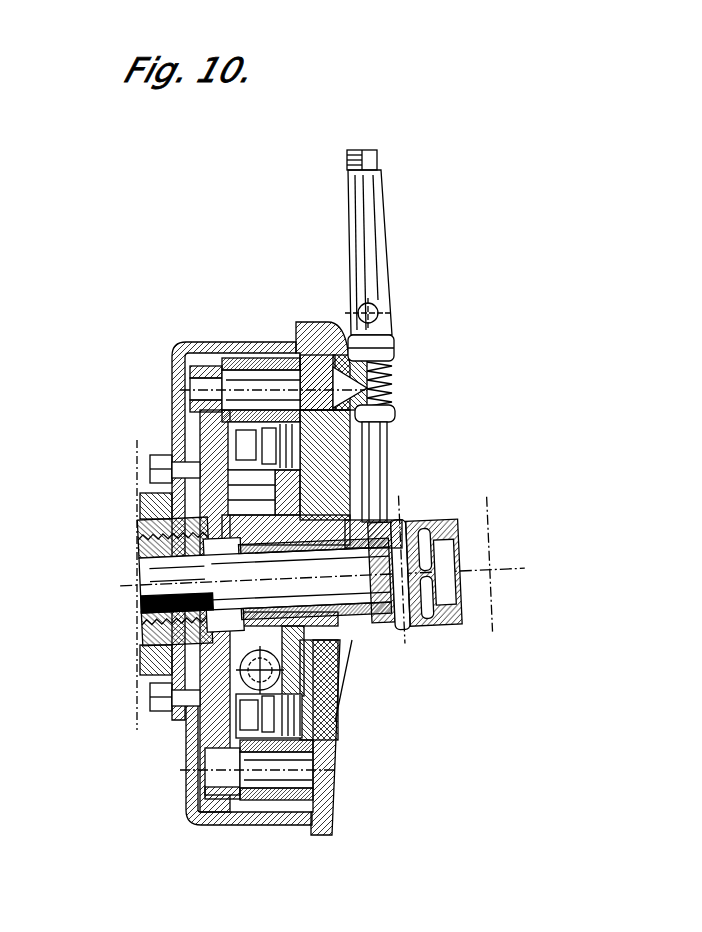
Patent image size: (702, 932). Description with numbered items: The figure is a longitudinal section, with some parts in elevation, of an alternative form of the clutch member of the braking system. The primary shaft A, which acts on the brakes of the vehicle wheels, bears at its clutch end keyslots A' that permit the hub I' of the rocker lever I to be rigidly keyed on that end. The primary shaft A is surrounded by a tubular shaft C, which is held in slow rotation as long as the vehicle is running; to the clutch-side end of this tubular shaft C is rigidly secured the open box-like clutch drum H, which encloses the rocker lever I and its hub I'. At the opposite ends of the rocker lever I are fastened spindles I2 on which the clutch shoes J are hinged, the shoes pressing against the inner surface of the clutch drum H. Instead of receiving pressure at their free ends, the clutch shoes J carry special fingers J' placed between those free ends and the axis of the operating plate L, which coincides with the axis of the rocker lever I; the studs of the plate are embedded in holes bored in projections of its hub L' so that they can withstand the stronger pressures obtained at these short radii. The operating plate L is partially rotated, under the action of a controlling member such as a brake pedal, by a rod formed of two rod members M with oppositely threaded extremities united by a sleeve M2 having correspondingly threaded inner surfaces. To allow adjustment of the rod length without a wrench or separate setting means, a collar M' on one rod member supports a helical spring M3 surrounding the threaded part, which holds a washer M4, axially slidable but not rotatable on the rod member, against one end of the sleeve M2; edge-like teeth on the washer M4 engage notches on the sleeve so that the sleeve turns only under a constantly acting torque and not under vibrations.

The clutch drum H is at (180, 342).
The rocker lever I is at (198, 388).
The spindles I2 is at (252, 388).
The hub of the rocker lever I' is at (315, 671).
The primary shaft A is at (278, 567).
The keyslots A' is at (470, 565).
The tubular shaft C is at (150, 633).
The clutch shoes J is at (317, 617).
The fingers J' is at (339, 699).
The operating plate L is at (335, 769).
The hub of the operating plate L' is at (401, 681).
The rod members M is at (427, 294).
The sleeve M2 is at (370, 279).
The helical spring M3 is at (395, 390).
The washer M4 is at (395, 345).
The collar M' is at (404, 476).